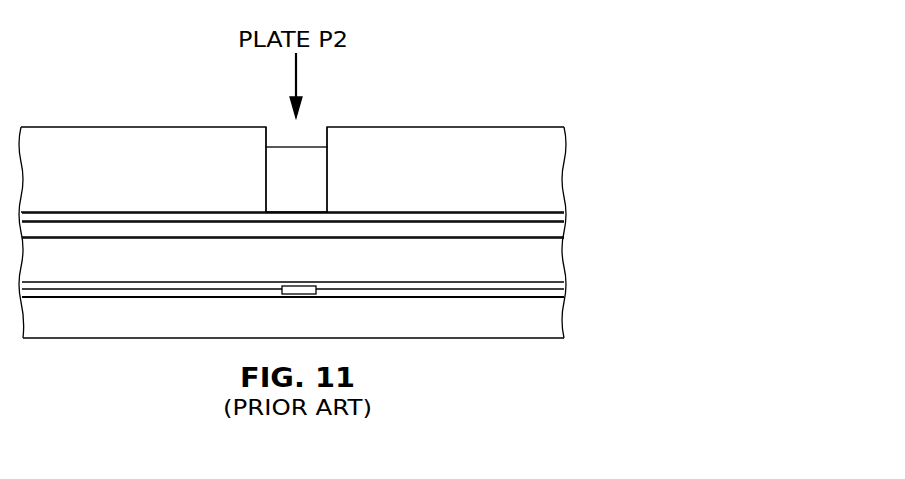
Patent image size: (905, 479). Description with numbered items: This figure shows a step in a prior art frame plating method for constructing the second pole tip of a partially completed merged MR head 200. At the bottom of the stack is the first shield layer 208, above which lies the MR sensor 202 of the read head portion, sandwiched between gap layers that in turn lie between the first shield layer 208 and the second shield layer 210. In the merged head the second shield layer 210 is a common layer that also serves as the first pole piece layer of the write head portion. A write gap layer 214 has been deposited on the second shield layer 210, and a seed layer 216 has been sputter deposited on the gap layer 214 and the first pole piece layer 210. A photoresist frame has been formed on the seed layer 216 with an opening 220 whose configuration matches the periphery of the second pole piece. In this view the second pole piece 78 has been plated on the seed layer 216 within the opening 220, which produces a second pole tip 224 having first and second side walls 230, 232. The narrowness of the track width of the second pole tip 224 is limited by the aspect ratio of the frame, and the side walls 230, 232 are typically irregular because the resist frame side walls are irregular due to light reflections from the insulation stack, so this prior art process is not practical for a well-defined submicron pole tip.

The merged MR head 200 is at (547, 112).
The second pole piece 78 is at (302, 142).
The opening 220 is at (285, 133).
The second pole tip 224 is at (265, 157).
The first side wall 230 is at (265, 201).
The second side wall 232 is at (328, 201).
The seed layer 216 is at (564, 214).
The write gap layer 214 is at (564, 228).
The second shield layer 210 is at (556, 255).
The MR sensor 202 is at (287, 295).
The first shield layer 208 is at (556, 316).